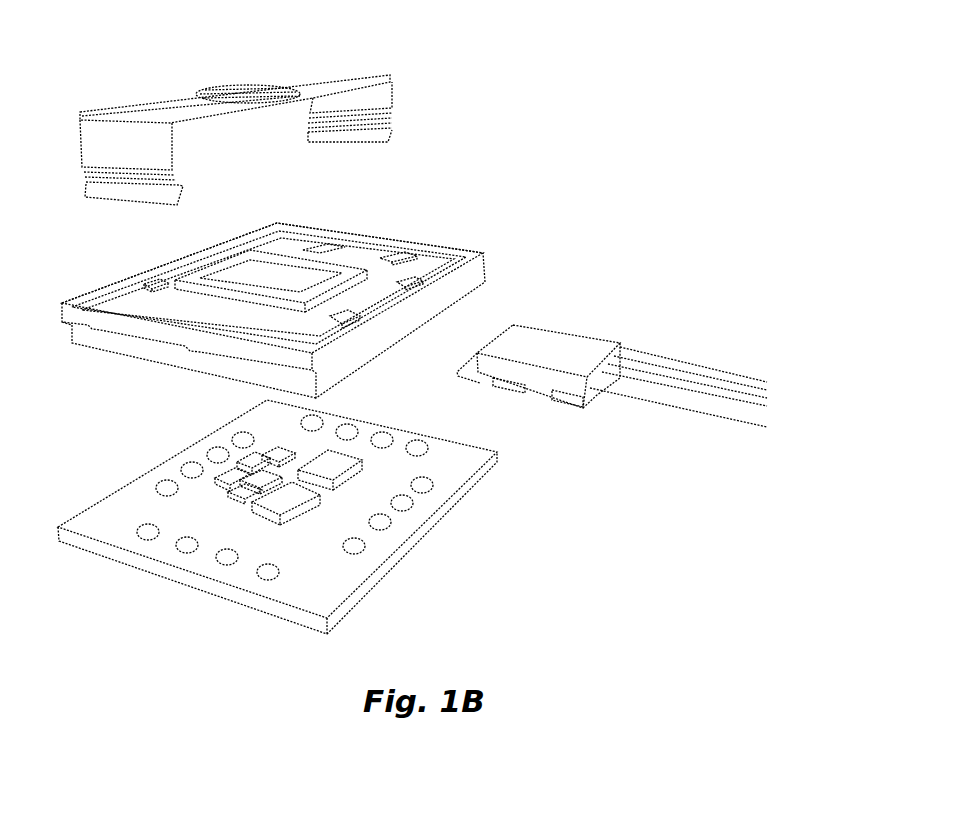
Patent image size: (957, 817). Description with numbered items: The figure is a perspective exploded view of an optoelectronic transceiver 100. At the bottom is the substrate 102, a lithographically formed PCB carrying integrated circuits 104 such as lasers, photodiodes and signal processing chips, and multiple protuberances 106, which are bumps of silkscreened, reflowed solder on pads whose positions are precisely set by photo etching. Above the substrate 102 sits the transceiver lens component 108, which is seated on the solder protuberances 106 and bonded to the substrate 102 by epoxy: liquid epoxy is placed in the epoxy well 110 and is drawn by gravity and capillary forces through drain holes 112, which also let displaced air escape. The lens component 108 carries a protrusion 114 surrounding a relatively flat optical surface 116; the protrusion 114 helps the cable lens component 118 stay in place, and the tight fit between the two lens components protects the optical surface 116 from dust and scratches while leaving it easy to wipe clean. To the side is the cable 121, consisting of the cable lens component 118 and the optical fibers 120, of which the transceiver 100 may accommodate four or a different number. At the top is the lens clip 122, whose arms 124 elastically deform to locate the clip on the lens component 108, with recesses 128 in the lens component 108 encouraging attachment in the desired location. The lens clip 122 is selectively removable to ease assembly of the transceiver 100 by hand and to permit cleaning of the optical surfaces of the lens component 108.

The optoelectronic transceiver 100 is at (534, 200).
The substrate 102 is at (145, 566).
The integrated circuits 104 is at (310, 542).
The protuberances 106 is at (426, 481).
The lens component 108 is at (283, 225).
The epoxy well 110 is at (380, 290).
The drain holes 112 is at (323, 243).
The protrusion 114 is at (347, 270).
The optical surface 116 is at (248, 268).
The cable lens component 118 is at (588, 343).
The optical fibers 120 is at (682, 372).
The cable 121 is at (604, 298).
The lens clip 122 is at (301, 84).
The arms 124 is at (363, 141).
The recesses 128 is at (157, 358).